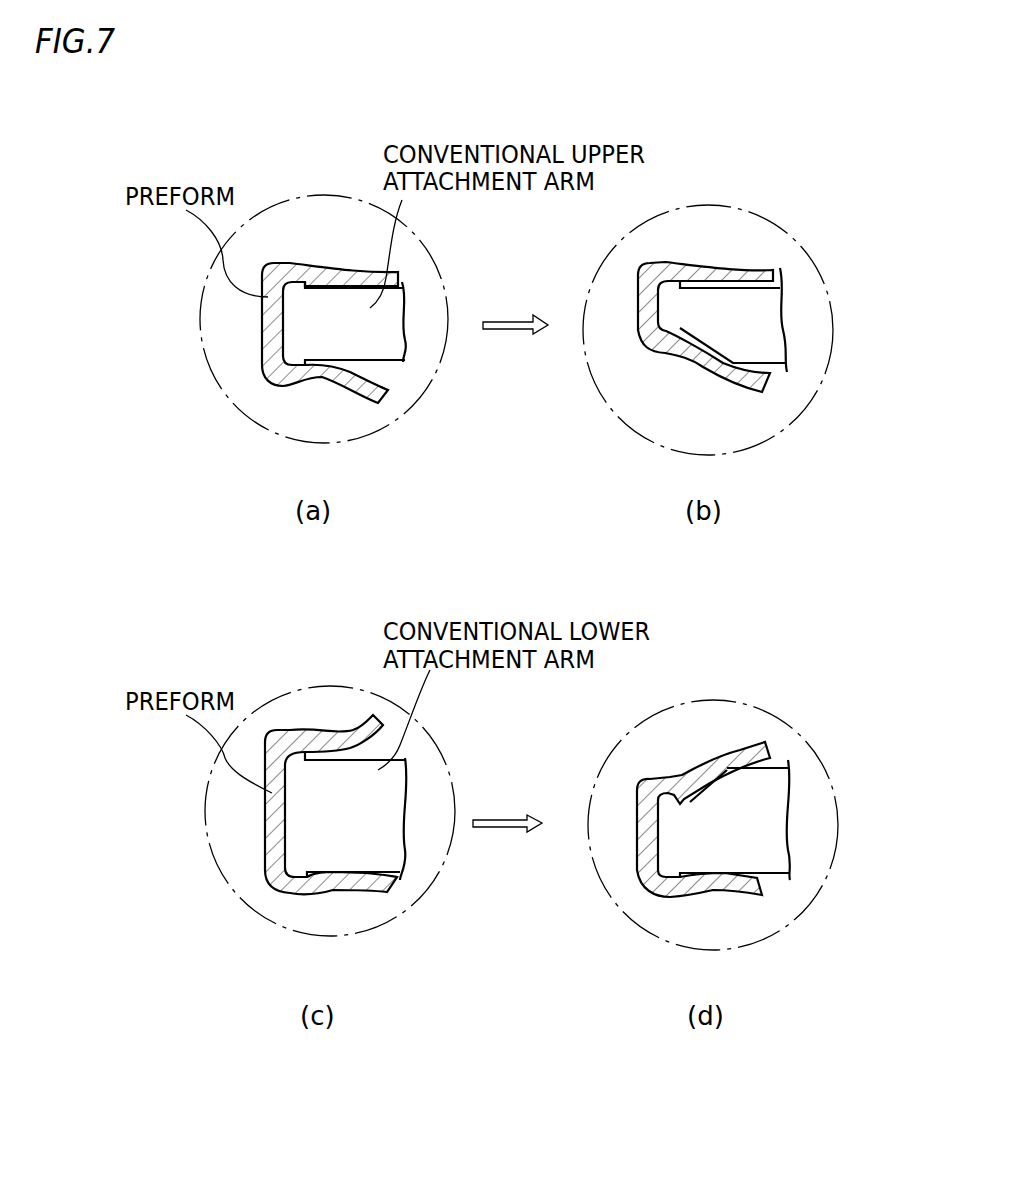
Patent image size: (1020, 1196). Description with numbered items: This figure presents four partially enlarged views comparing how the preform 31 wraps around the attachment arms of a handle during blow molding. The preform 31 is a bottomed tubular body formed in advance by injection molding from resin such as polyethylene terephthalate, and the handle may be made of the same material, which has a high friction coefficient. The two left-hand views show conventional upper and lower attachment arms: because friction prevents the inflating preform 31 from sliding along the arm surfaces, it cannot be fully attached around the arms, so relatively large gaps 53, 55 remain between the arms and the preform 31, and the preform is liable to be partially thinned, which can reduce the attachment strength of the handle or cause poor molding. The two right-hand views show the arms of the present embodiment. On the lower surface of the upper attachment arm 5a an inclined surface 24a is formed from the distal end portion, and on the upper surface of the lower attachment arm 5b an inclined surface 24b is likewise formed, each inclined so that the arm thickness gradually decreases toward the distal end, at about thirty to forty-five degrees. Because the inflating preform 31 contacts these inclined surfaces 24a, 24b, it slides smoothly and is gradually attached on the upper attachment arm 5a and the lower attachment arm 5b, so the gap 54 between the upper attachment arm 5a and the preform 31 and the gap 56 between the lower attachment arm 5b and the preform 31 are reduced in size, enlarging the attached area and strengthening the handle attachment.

The upper attachment arm 5a is at (743, 303).
The lower attachment arm 5b is at (753, 790).
The inclined surface 24a is at (688, 340).
The inclined surface 24b is at (703, 789).
The preform 31 is at (640, 295).
The gap 53 is at (365, 363).
The gap 54 is at (667, 337).
The gap 55 is at (368, 752).
The gap 56 is at (682, 797).